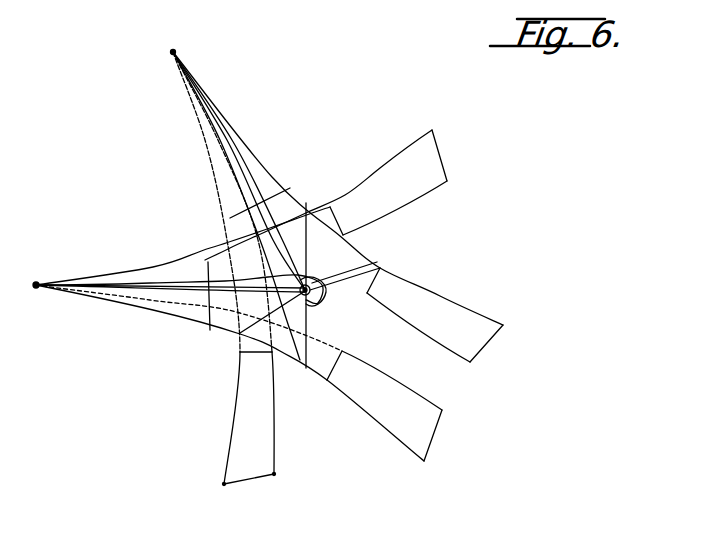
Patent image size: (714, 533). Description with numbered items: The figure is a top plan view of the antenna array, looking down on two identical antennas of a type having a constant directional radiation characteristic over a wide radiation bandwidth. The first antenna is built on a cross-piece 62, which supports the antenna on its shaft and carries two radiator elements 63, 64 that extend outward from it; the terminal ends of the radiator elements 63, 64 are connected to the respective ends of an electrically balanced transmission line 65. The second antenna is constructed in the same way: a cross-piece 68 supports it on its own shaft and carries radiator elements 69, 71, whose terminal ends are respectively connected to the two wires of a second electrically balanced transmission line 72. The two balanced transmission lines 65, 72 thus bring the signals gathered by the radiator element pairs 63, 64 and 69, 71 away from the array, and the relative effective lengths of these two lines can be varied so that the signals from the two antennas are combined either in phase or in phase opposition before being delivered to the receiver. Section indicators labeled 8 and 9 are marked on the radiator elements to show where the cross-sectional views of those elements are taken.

The cross-piece 62 is at (355, 262).
The radiator element 63 is at (250, 387).
The radiator element 64 is at (460, 317).
The electrically balanced transmission line 65 is at (245, 182).
The cross-piece 68 is at (322, 318).
The radiator element 69 is at (385, 180).
The radiator element 71 is at (407, 420).
The electrically balanced transmission line 72 is at (190, 280).
The section line 8 is at (362, 337).
The section line 9 is at (330, 318).